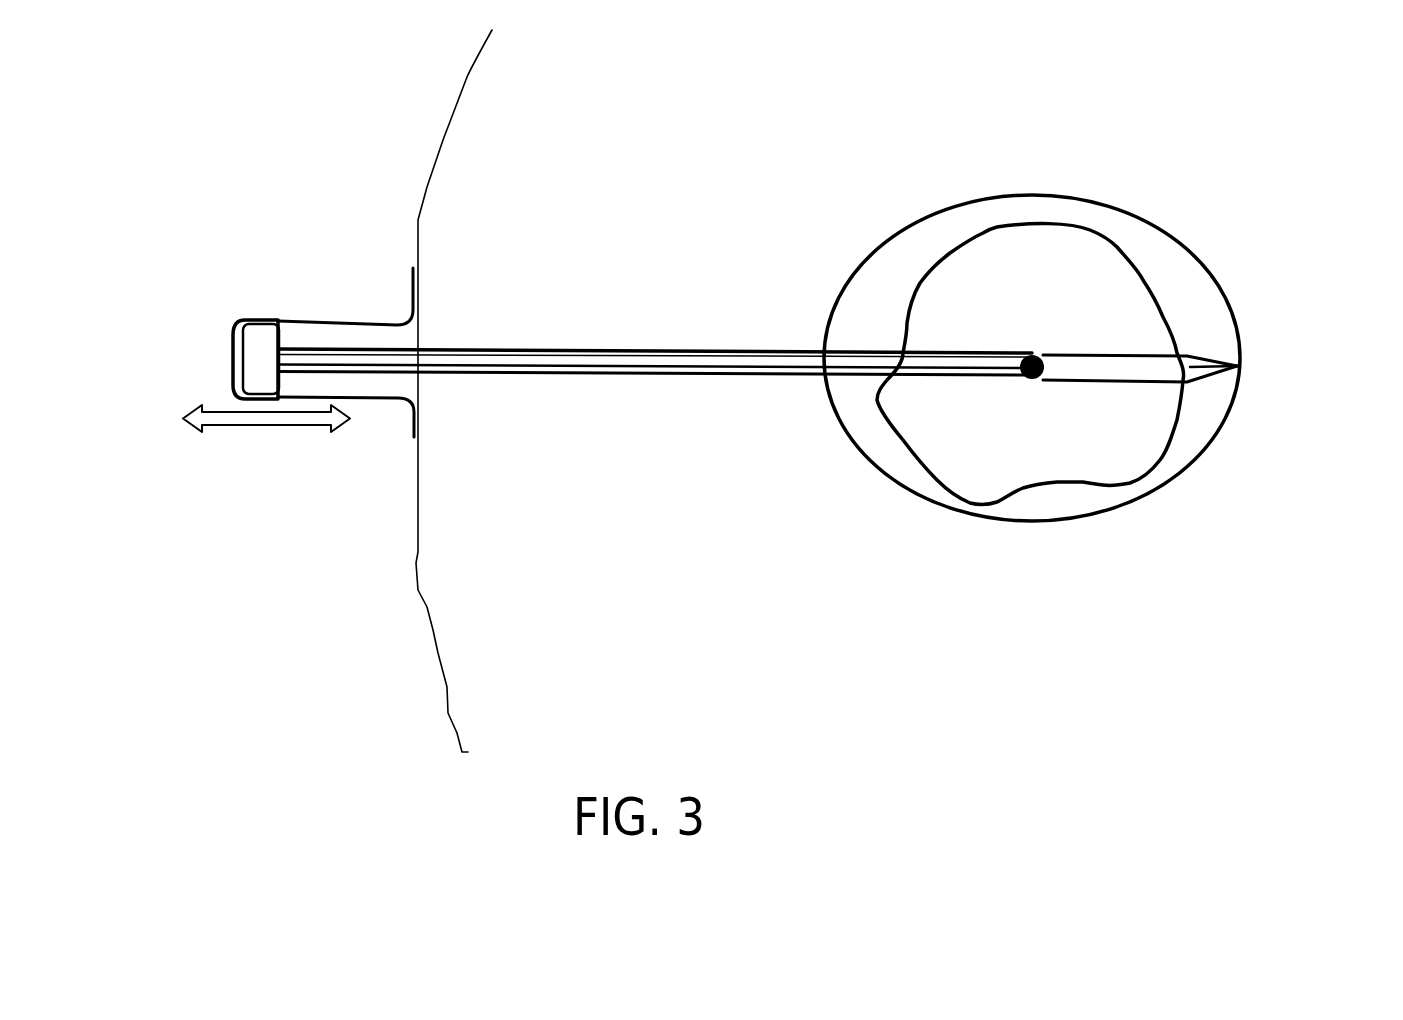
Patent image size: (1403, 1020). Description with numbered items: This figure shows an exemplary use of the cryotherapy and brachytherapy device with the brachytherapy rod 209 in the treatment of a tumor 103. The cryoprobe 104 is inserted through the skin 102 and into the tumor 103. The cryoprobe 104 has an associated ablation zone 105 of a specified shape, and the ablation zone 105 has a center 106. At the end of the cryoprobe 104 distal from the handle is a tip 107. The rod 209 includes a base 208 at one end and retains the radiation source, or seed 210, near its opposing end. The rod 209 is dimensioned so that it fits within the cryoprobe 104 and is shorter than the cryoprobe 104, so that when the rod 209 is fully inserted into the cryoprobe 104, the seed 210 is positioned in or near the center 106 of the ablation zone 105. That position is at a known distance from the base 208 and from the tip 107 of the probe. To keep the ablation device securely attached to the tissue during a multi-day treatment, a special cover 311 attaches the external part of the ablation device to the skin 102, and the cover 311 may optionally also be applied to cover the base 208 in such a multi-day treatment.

The skin 102 is at (438, 643).
The tumor 103 is at (903, 315).
The cryoprobe 104 is at (507, 373).
The ablation zone 105 is at (890, 247).
The center 106 is at (1027, 377).
The tip 107 is at (1236, 368).
The base 208 is at (240, 371).
The rod 209 is at (510, 347).
The radiation source (seed) 210 is at (1030, 353).
The cover 311 is at (300, 313).